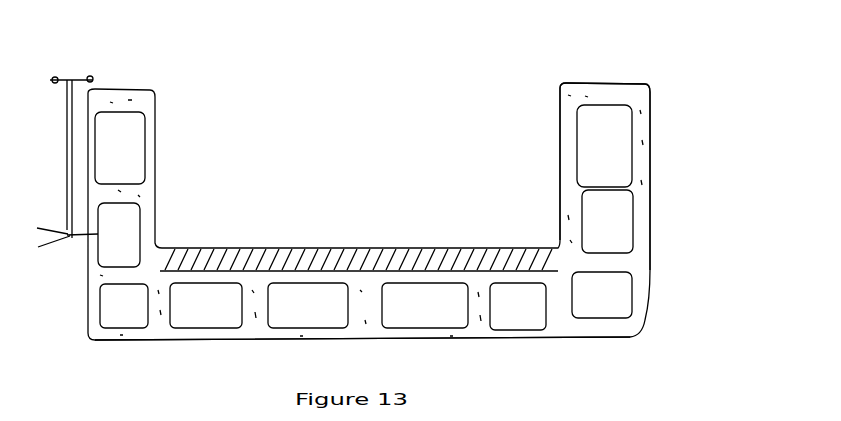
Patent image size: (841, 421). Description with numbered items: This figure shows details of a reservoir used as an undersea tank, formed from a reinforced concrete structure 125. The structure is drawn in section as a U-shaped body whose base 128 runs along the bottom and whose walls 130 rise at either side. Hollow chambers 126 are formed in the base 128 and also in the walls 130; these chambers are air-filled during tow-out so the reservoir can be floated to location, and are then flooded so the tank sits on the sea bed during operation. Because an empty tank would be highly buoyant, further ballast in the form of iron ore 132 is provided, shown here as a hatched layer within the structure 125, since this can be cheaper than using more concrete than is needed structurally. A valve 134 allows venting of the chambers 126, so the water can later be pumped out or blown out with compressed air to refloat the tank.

The reinforced concrete structure 125 is at (640, 290).
The hollow chambers 126 is at (605, 152).
The base 128 is at (483, 340).
The walls 130 is at (650, 198).
The iron ore 132 is at (239, 249).
The valve 134 is at (70, 80).